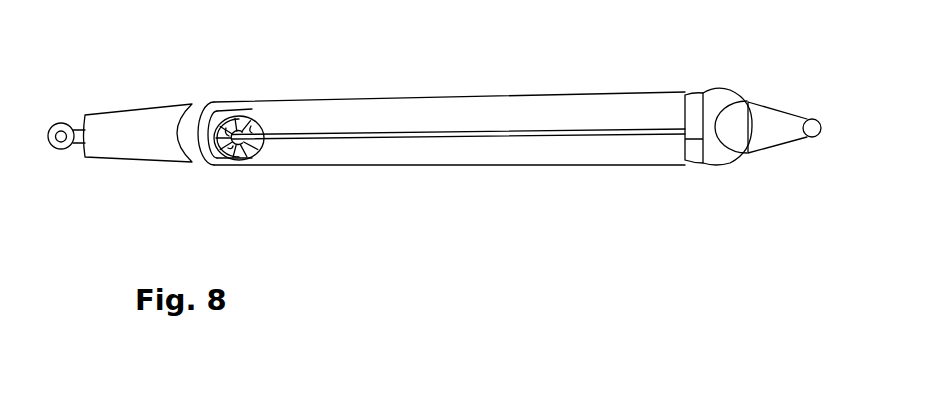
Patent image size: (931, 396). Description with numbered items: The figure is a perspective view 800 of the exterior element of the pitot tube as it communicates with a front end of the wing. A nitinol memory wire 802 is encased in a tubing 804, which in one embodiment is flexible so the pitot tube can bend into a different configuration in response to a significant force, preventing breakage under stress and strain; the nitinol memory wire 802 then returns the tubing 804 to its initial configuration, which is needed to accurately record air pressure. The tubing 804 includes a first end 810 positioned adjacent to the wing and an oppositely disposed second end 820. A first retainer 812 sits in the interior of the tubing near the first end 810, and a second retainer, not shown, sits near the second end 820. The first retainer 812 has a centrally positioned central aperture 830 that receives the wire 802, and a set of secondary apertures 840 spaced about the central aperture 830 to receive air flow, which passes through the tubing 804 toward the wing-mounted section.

The perspective view 800 is at (434, 186).
The nitinol memory wire 802 is at (482, 138).
The tubing 804 is at (442, 97).
The first end 810 is at (154, 163).
The first retainer 812 is at (215, 102).
The second end 820 is at (693, 93).
The central aperture 830 is at (240, 160).
The secondary apertures 840 is at (250, 115).